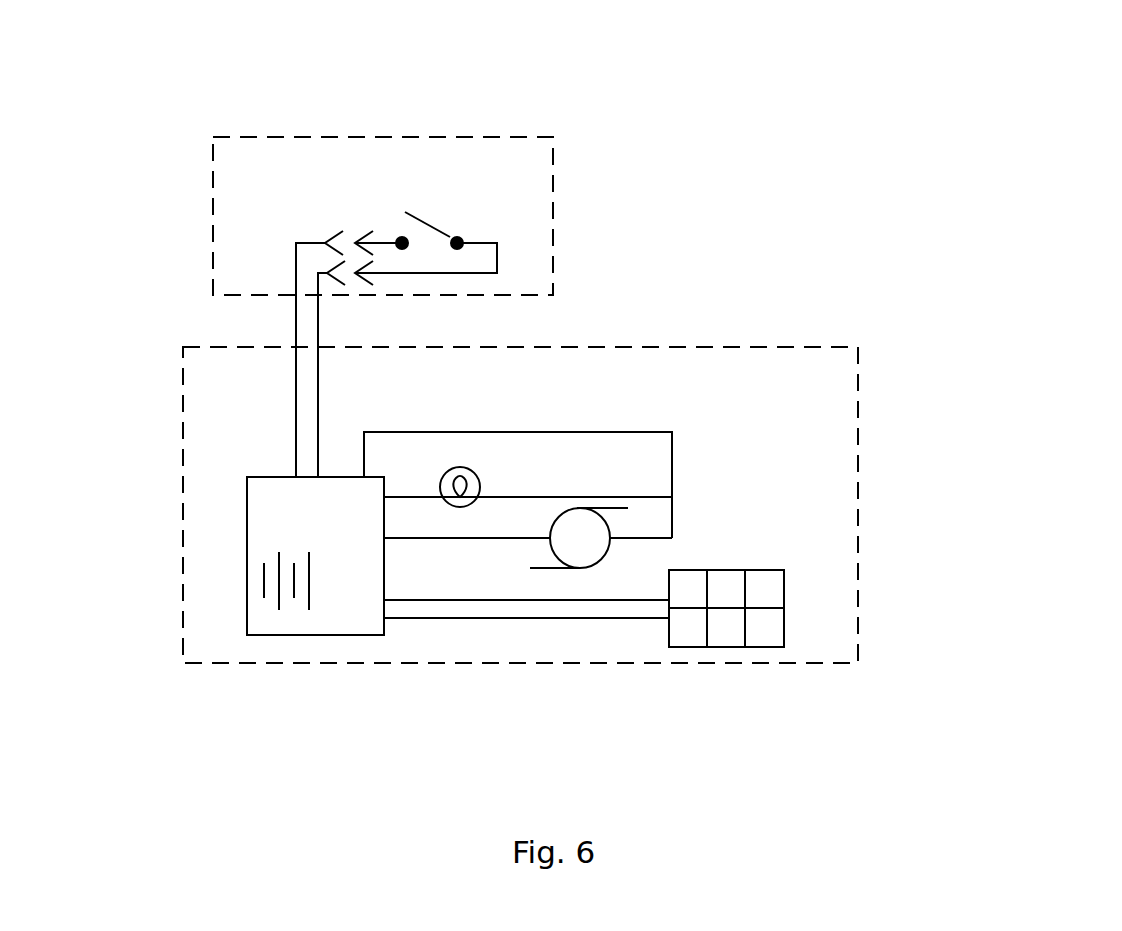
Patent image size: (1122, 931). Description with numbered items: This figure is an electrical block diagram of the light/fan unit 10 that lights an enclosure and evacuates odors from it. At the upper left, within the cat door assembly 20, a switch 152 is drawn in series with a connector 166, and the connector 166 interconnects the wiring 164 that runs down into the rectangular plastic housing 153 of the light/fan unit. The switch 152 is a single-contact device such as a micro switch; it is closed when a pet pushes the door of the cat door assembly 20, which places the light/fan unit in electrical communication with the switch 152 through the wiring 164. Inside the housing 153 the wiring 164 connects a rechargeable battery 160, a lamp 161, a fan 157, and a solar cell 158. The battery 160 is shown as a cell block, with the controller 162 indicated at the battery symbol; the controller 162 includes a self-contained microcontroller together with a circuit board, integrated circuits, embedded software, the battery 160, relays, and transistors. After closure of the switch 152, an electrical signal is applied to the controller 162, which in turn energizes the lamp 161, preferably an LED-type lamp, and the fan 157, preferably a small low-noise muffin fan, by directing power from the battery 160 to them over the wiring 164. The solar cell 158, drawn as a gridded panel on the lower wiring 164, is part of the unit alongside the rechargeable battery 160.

The tool system 10 is at (942, 112).
The cat door assembly 20 is at (553, 213).
The switch 152 is at (413, 235).
The rectangular plastic housing 153 is at (858, 444).
The fan 157 is at (587, 570).
The solar cell 158 is at (722, 632).
The rechargeable battery 160 is at (297, 608).
The lamp 161 is at (472, 474).
The controller 162 is at (247, 603).
The wiring 164 is at (318, 384).
The connector 166 is at (320, 256).